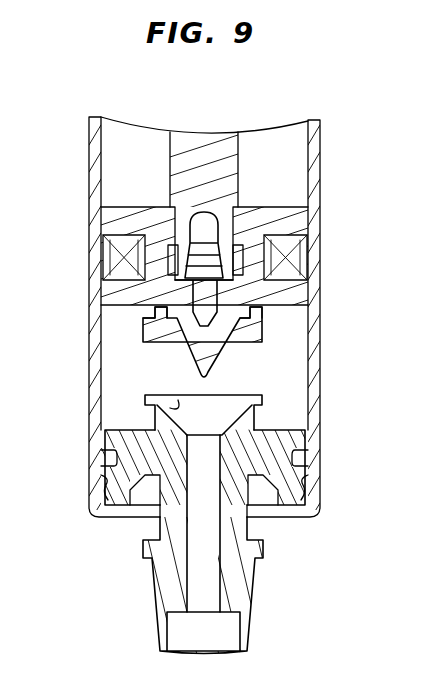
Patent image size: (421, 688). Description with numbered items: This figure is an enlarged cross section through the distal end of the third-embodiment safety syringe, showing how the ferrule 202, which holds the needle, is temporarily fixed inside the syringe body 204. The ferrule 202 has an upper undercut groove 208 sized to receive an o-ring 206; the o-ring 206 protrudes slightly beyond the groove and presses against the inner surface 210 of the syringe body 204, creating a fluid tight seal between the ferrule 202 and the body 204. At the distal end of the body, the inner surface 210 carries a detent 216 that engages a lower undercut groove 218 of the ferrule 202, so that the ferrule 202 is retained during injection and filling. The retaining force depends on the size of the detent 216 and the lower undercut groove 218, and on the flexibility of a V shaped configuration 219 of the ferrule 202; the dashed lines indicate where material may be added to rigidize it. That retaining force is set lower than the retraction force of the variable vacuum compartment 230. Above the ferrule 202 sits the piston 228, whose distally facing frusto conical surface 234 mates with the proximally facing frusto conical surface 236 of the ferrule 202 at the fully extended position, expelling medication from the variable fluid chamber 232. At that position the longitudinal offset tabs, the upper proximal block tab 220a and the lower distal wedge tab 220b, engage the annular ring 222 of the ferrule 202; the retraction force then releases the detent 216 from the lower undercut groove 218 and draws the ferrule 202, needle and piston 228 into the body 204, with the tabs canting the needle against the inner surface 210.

The ferrule 202 is at (250, 578).
The syringe body 204 is at (310, 194).
The o-ring 206 is at (308, 437).
The upper undercut groove 208 is at (305, 465).
The inner surface 210 is at (306, 167).
The detent 216 is at (101, 486).
The lower undercut groove 218 is at (105, 518).
The V shaped configuration 219 is at (143, 522).
The upper proximal block tab 220a is at (140, 311).
The lower distal wedge tab 220b is at (285, 330).
The annular ring 222 is at (262, 397).
The piston 228 is at (285, 227).
The variable vacuum compartment 230 is at (285, 150).
The variable fluid chamber 232 is at (118, 360).
The distally facing frusto conical surface 234 is at (180, 348).
The proximally facing frusto conical surface 236 is at (165, 400).